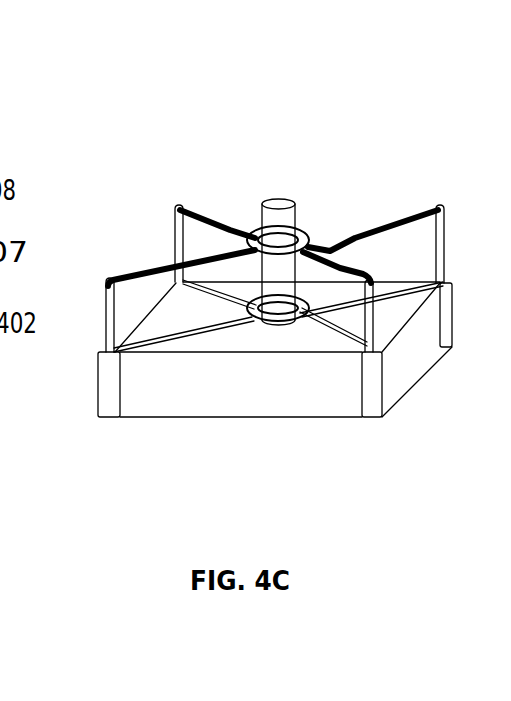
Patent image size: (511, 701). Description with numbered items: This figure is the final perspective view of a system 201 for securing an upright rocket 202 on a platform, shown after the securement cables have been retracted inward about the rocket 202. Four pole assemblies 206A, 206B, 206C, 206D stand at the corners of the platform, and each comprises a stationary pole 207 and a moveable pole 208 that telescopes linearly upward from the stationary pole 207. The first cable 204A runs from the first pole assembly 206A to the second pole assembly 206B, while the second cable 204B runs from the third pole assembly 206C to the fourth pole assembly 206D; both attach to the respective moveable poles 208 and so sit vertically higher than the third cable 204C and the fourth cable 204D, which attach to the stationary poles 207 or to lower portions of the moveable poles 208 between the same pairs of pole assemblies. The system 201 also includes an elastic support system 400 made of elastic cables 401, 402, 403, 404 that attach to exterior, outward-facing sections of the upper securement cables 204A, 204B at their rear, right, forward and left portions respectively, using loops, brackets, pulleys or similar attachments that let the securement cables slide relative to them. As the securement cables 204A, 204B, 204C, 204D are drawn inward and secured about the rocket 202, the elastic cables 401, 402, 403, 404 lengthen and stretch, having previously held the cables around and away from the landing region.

The system 201 is at (174, 88).
The upright rocket 202 is at (277, 204).
The first cable 204A is at (416, 209).
The second cable 204B is at (223, 216).
The third cable 204C is at (143, 342).
The fourth cable 204D is at (349, 340).
The first pole assembly 206A is at (438, 206).
The second pole assembly 206B is at (372, 421).
The third pole assembly 206C is at (107, 420).
The fourth pole assembly 206D is at (179, 205).
The stationary pole 207 is at (116, 412).
The moveable pole 208 is at (174, 233).
The elastic support system 400 is at (110, 279).
The elastic cable 401 is at (244, 224).
The elastic cable 402 is at (330, 287).
The elastic cable 403 is at (170, 282).
The elastic cable 404 is at (176, 232).